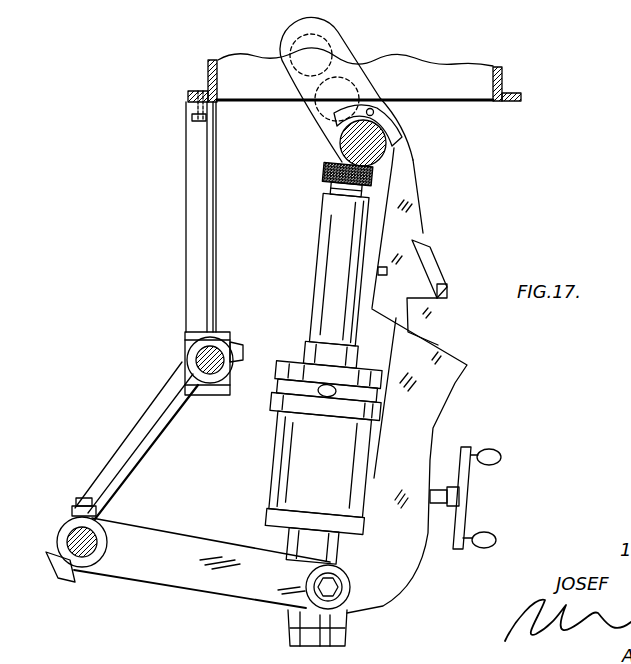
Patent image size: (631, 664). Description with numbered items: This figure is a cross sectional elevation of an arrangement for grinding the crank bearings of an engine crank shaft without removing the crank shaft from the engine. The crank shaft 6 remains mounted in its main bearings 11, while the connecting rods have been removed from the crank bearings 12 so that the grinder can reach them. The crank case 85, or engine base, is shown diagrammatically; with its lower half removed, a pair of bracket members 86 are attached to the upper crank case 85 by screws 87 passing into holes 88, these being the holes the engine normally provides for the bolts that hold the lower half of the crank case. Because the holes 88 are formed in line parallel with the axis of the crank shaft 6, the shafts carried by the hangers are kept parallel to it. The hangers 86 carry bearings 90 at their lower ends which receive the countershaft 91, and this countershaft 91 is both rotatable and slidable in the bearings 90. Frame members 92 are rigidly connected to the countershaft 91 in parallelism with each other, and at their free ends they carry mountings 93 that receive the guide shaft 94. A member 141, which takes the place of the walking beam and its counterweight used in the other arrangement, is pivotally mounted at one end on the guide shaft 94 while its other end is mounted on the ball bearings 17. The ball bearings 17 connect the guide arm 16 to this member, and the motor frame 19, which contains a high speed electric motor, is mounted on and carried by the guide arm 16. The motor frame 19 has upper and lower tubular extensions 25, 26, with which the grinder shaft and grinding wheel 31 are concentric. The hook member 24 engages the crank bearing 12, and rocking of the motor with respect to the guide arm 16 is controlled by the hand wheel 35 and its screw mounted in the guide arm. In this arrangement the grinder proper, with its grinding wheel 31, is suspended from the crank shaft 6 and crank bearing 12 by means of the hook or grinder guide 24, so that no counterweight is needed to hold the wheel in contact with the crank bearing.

The crank shaft 6 is at (337, 37).
The main bearings 11 is at (357, 88).
The crank bearings 12 is at (350, 143).
The guide arm 16 is at (456, 389).
The ball bearings 17 is at (345, 603).
The motor frame 19 is at (278, 458).
The hook member 24 is at (410, 174).
The upper tubular extension 25 is at (320, 547).
The lower tubular extension 26 is at (322, 249).
The grinding wheel 31 is at (322, 175).
The hand wheel 35 is at (471, 442).
The crank case 85 is at (499, 77).
The bracket members 86 is at (186, 214).
The screws 87 is at (192, 121).
The holes 88 is at (201, 91).
The bearings 90 is at (190, 356).
The countershaft 91 is at (224, 362).
The frame members 92 is at (138, 427).
The mountings 93 is at (72, 520).
The guide shaft 94 is at (72, 543).
The member 141 is at (197, 546).